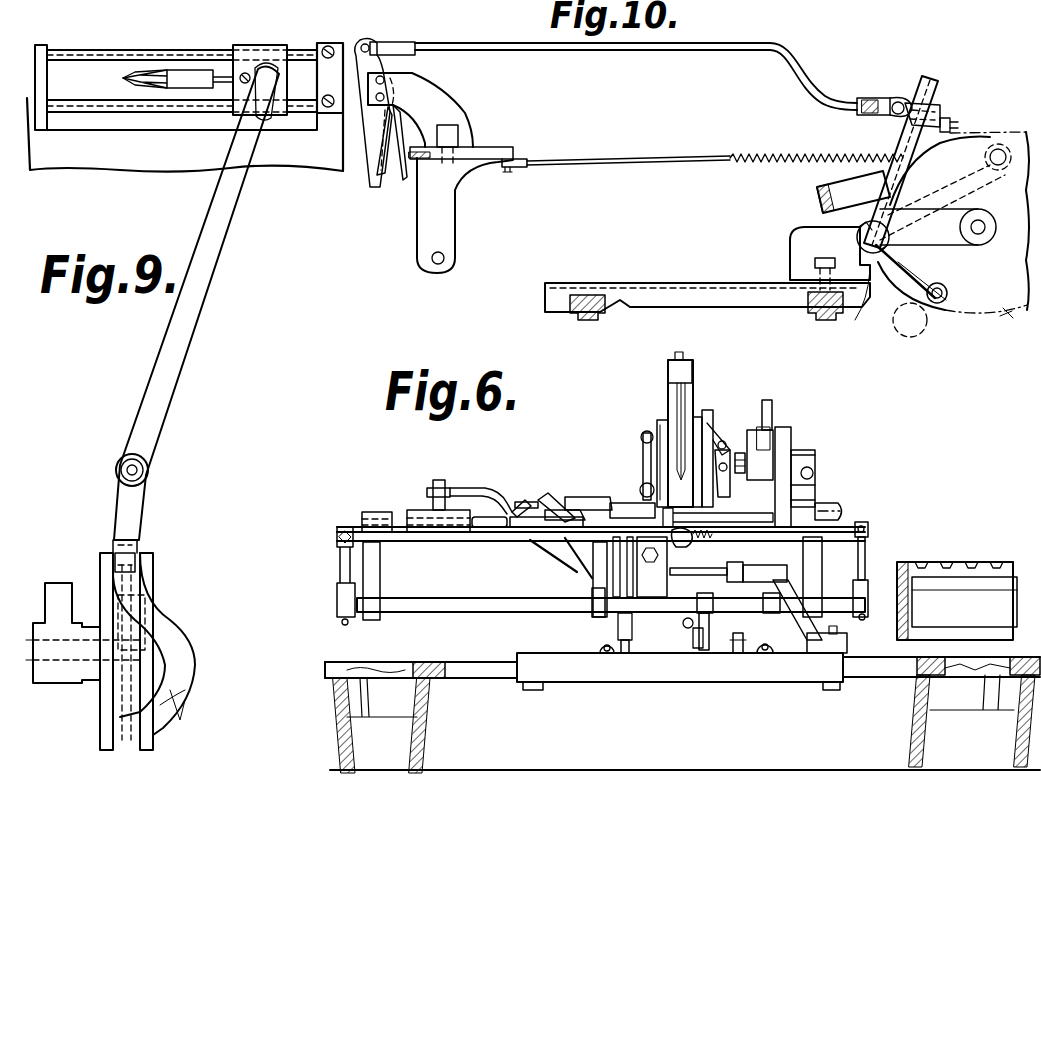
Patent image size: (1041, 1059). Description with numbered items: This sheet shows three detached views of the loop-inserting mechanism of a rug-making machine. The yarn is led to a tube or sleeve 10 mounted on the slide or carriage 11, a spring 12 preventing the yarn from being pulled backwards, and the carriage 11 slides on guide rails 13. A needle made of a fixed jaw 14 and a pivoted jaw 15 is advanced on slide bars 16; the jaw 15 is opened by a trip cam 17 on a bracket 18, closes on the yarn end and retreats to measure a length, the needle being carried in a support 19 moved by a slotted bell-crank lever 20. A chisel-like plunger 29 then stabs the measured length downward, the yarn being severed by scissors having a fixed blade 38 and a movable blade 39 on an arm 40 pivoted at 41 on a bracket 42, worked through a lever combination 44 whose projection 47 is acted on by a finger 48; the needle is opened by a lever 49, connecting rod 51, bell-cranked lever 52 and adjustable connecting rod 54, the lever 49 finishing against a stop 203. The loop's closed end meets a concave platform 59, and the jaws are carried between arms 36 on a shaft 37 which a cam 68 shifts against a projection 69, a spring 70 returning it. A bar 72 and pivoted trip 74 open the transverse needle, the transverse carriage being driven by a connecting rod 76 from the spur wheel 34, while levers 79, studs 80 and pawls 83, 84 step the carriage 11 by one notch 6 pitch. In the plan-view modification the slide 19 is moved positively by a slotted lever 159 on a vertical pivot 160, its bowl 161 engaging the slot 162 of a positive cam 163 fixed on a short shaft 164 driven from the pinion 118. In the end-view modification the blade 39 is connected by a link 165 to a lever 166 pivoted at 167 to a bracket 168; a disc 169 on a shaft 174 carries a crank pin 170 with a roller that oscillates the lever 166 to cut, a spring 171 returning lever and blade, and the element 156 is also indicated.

In FIG. 6, the notch 6 is at (973, 562).
In FIG. 6, the tube or sleeve 10 is at (755, 538).
In FIG. 10, the slide or carriage 11 is at (670, 285).
In FIG. 6, the slide or carriage 11 is at (793, 682).
In FIG. 6, the spring 12 is at (843, 507).
In FIG. 10, the guide rail 13 is at (818, 312).
In FIG. 6, the fixed jaw 14 is at (572, 505).
In FIG. 9, the pivoted jaw 15 is at (140, 92).
In FIG. 6, the pivoted jaw 15 is at (546, 492).
In FIG. 6, the slide bar 16 is at (485, 530).
In FIG. 6, the trip cam 17 is at (812, 490).
In FIG. 6, the bracket 18 is at (722, 440).
In FIG. 9, the support 19 is at (275, 55).
In FIG. 6, the support 19 is at (415, 512).
In FIG. 6, the slotted bell-crank lever 20 is at (590, 578).
In FIG. 6, the chisel-like plunger 29 is at (668, 405).
In FIG. 10, the spur wheel 34 is at (1010, 322).
In FIG. 6, the arm 36 is at (868, 555).
In FIG. 6, the shaft 37 is at (450, 612).
In FIG. 10, the fixed blade 38 is at (380, 178).
In FIG. 6, the fixed blade 38 is at (815, 452).
In FIG. 10, the movable blade 39 is at (405, 67).
In FIG. 6, the movable blade 39 is at (791, 440).
In FIG. 6, the arm 40 is at (772, 412).
In FIG. 6, the pivot 41 is at (741, 453).
In FIG. 6, the bracket 42 is at (815, 458).
In FIG. 6, the lever combination 44 is at (710, 410).
In FIG. 6, the projection 47 is at (698, 417).
In FIG. 6, the finger 48 is at (668, 395).
In FIG. 6, the lever 49 is at (528, 502).
In FIG. 6, the connecting rod 51 is at (598, 497).
In FIG. 6, the bell-cranked lever 52 is at (630, 503).
In FIG. 6, the connecting rod 54 is at (643, 445).
In FIG. 6, the concave platform 59 is at (680, 565).
In FIG. 6, the cam 68 is at (705, 652).
In FIG. 6, the projection 69 is at (686, 628).
In FIG. 6, the spring 70 is at (800, 595).
In FIG. 6, the bar 72 is at (738, 579).
In FIG. 6, the pivoted cam or trip 74 is at (765, 570).
In FIG. 10, the connecting rod 76 is at (822, 201).
In FIG. 6, the lever 79 is at (768, 622).
In FIG. 6, the stud 80 is at (750, 700).
In FIG. 6, the pawl 83 is at (806, 640).
In FIG. 6, the pawl 84 is at (598, 642).
In FIG. 10, the pinion 118 is at (910, 337).
In FIG. 10, the cam 156 is at (890, 295).
In FIG. 9, the slotted lever 159 is at (195, 322).
In FIG. 9, the pivot 160 is at (148, 470).
In FIG. 9, the bowl 161 is at (135, 560).
In FIG. 9, the slot 162 is at (160, 700).
In FIG. 9, the positive cam 163 is at (183, 630).
In FIG. 9, the short shaft 164 is at (50, 683).
In FIG. 10, the link 165 is at (790, 45).
In FIG. 10, the lever 166 is at (905, 140).
In FIG. 10, the pivot 167 is at (855, 320).
In FIG. 10, the bracket 168 is at (790, 258).
In FIG. 10, the disc 169 is at (988, 308).
In FIG. 10, the crank pin 170 is at (940, 303).
In FIG. 10, the spring 171 is at (776, 165).
In FIG. 10, the shaft 174 is at (978, 234).
In FIG. 6, the stop 203 is at (518, 498).